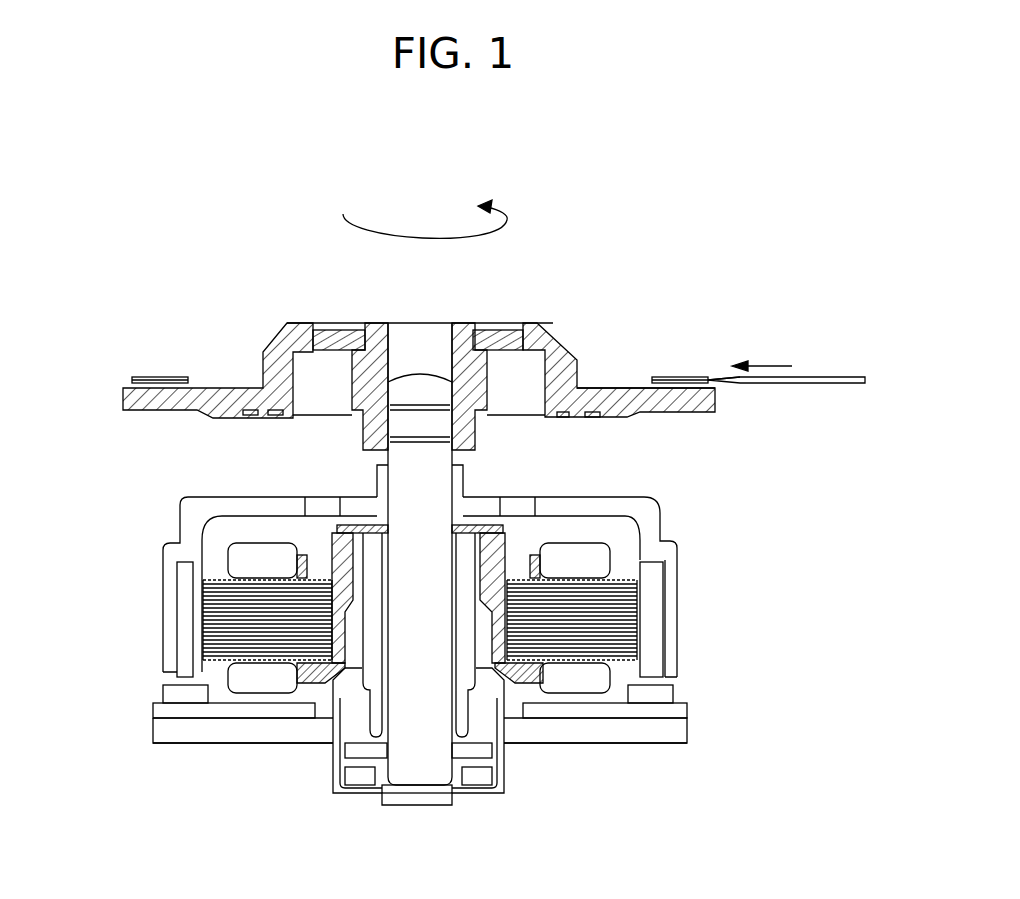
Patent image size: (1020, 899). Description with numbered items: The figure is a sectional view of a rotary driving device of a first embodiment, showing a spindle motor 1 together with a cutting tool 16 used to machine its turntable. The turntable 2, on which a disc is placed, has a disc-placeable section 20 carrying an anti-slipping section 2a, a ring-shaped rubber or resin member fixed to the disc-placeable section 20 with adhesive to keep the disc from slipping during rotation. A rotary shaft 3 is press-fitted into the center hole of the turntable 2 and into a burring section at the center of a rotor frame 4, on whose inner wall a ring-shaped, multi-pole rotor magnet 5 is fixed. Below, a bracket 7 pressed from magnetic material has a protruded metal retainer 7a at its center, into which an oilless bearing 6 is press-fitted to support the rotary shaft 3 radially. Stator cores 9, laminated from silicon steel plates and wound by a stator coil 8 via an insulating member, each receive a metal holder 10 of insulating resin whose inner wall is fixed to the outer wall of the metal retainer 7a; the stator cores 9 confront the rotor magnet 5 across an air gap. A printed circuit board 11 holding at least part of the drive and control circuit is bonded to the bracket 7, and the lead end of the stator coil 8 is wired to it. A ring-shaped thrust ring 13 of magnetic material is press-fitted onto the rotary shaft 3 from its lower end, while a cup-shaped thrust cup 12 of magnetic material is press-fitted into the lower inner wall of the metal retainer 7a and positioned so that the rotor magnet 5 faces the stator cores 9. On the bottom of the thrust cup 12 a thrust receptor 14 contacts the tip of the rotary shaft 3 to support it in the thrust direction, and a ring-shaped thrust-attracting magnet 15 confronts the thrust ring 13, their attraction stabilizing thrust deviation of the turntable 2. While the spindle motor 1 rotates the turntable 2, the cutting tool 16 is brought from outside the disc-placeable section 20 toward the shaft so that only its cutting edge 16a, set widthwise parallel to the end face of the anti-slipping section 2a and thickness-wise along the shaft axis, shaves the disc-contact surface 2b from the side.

The spindle motor 1 is at (610, 763).
The turntable 2 is at (218, 350).
The anti-slipping section 2a is at (685, 377).
The surface to be contacted with a disc 2b is at (153, 374).
The rotary shaft 3 is at (420, 397).
The rotor frame 4 is at (468, 583).
The rotor magnet 5 is at (647, 643).
The oilless bearing 6 is at (600, 517).
The bracket 7 is at (647, 735).
The metal retainer 7a is at (330, 632).
The stator coil 8 is at (593, 557).
The stator cores 9 is at (577, 617).
The metal holder 10 is at (328, 553).
The printed circuit board 11 is at (237, 712).
The thrust cup 12 is at (335, 757).
The thrust ring 13 is at (370, 750).
The thrust receptor 14 is at (417, 788).
The thrust-attracting magnet 15 is at (475, 777).
The cutting tool 16 is at (830, 375).
The cutting edge 16a is at (722, 389).
The disc-placeable section 20 is at (670, 370).